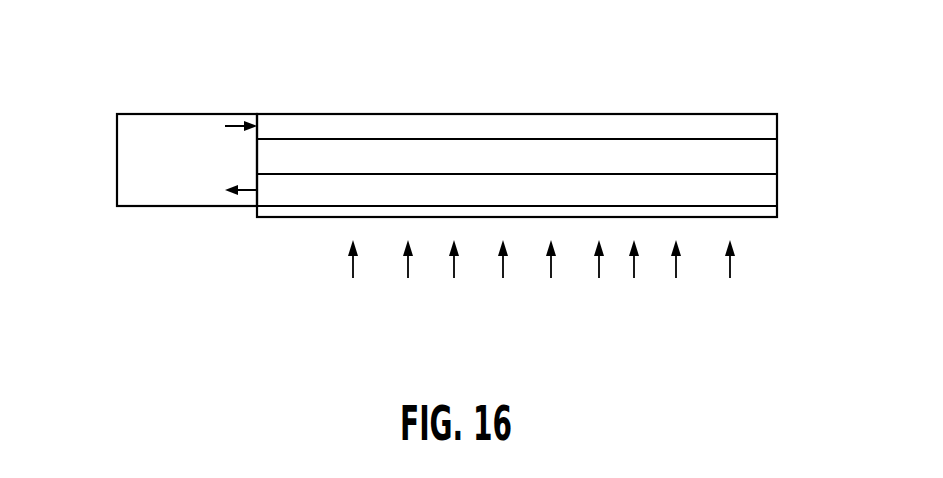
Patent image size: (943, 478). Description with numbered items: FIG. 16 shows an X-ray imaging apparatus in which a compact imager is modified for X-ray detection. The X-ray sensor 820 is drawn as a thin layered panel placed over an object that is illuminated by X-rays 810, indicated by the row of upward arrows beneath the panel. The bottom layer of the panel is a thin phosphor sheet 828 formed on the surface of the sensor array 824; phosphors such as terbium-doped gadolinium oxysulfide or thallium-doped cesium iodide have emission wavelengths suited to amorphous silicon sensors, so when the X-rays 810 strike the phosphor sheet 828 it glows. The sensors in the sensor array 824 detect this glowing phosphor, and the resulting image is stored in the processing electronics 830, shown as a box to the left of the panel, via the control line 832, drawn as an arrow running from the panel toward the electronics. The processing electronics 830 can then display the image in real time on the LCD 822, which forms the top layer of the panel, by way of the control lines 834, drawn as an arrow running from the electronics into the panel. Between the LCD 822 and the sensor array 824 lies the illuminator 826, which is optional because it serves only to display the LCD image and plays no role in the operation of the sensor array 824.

The X-rays 810 is at (600, 268).
The X-ray sensor 820 is at (490, 103).
The LCD 822 is at (736, 114).
The sensor array 824 is at (778, 189).
The illuminator 826 is at (778, 155).
The phosphor sheet 828 is at (778, 215).
The processing electronics 830 is at (117, 163).
The control line 832 is at (250, 190).
The control lines 834 is at (226, 126).